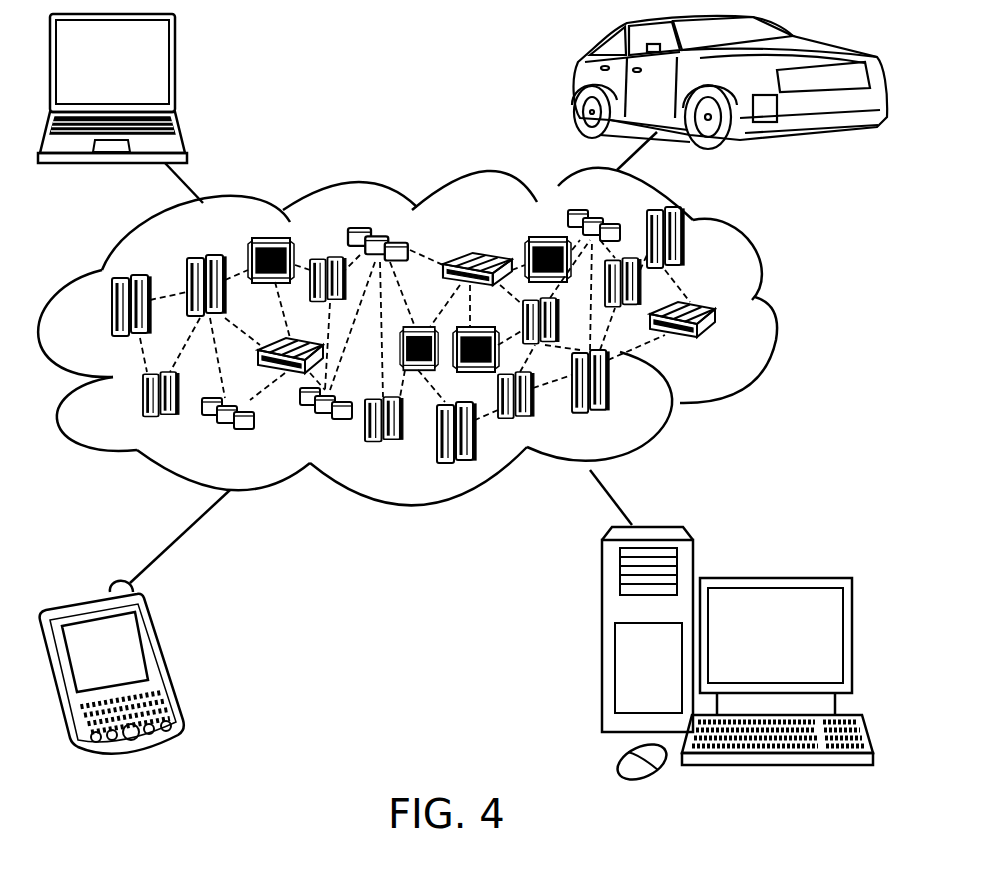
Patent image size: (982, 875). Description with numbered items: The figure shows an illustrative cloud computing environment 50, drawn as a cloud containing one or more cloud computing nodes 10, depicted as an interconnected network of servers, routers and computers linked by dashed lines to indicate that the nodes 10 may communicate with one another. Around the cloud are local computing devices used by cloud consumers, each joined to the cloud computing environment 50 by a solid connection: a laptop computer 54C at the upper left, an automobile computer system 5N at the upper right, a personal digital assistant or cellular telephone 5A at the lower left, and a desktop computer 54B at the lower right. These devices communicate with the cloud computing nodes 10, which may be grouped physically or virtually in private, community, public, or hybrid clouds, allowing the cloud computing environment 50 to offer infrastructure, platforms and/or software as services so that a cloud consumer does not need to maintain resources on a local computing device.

The laptop computer 54C is at (175, 68).
The automobile computer system 5N is at (573, 85).
The cloud computing environment 50 is at (776, 314).
The cloud computing nodes 10 is at (728, 346).
The personal digital assistant or cellular telephone 5A is at (167, 662).
The desktop computer 54B is at (772, 578).